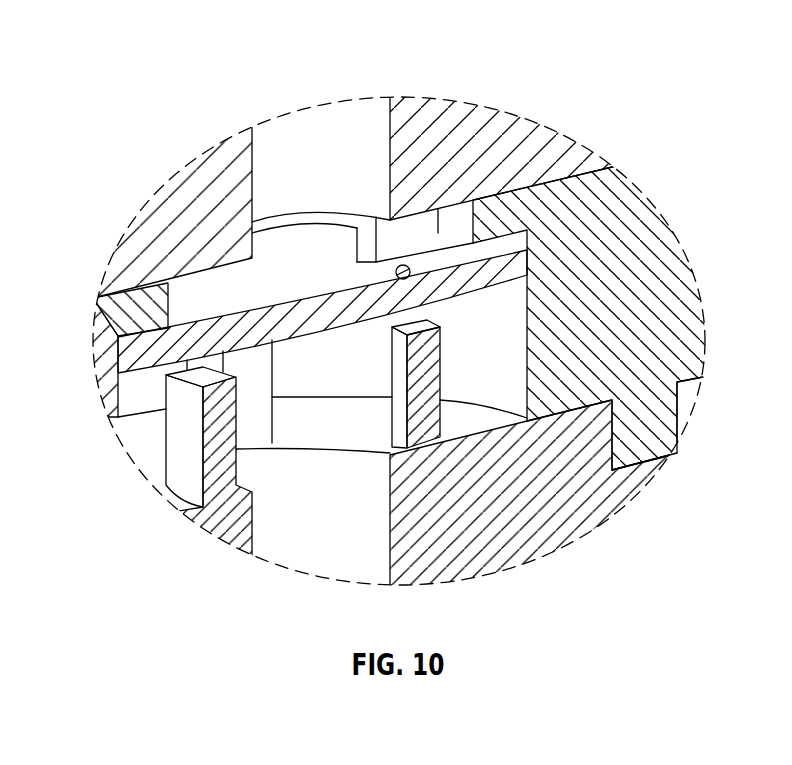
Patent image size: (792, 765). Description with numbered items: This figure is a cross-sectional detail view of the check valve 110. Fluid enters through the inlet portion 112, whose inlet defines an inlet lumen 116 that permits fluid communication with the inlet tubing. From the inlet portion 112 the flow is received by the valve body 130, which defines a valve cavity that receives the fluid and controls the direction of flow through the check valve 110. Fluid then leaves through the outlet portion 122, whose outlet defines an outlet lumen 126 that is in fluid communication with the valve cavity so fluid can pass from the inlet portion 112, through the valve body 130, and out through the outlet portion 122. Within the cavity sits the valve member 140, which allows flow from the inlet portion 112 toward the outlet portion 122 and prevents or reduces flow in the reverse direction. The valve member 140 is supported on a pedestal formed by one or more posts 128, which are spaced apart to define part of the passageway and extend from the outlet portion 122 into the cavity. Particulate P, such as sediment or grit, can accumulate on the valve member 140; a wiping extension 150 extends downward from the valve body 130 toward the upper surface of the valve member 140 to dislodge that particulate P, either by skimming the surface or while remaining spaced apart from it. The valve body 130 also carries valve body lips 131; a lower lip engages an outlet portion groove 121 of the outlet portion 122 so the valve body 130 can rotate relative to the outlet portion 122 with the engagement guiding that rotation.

The check valve 110 is at (620, 82).
The inlet portion 112 is at (162, 212).
The inlet lumen 116 is at (326, 130).
The outlet portion groove 121 is at (648, 466).
The outlet portion 122 is at (513, 543).
The outlet lumen 126 is at (313, 543).
The posts 128 is at (432, 361).
The valve body 130 is at (673, 278).
The valve body lips 131 is at (684, 427).
The valve member 140 is at (300, 318).
The wiping extension 150 is at (428, 232).
The particulate P is at (411, 269).